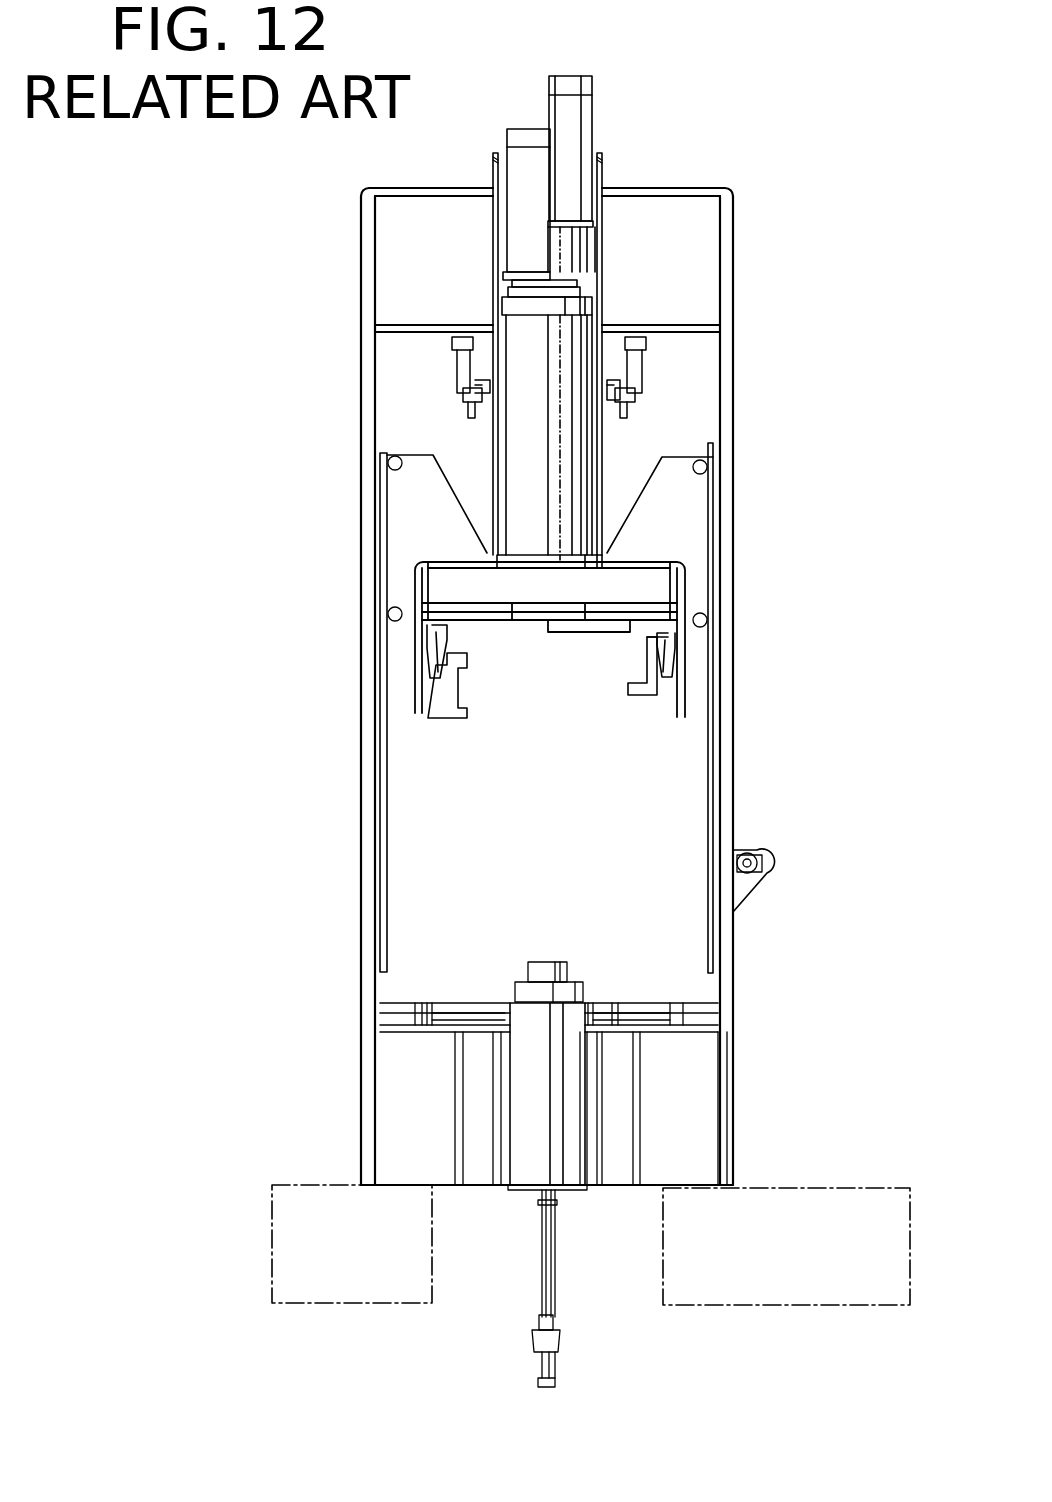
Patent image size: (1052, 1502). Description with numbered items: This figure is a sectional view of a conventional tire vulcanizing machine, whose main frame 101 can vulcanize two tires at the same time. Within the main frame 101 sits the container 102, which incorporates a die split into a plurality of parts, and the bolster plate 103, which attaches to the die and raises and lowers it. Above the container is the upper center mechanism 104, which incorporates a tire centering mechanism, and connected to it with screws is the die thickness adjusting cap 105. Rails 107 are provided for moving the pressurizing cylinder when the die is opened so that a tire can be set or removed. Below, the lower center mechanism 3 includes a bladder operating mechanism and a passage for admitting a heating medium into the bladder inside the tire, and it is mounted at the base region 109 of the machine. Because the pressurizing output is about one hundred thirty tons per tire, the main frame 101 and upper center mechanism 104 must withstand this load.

The main frame 101 is at (360, 780).
The container 102 is at (430, 647).
The bolster plate 103 is at (440, 582).
The upper center mechanism 104 is at (515, 330).
The die thickness adjusting cap 105 is at (520, 172).
The rails 107 is at (455, 369).
The table 109 is at (450, 1003).
The lower center mechanism 3 is at (520, 992).